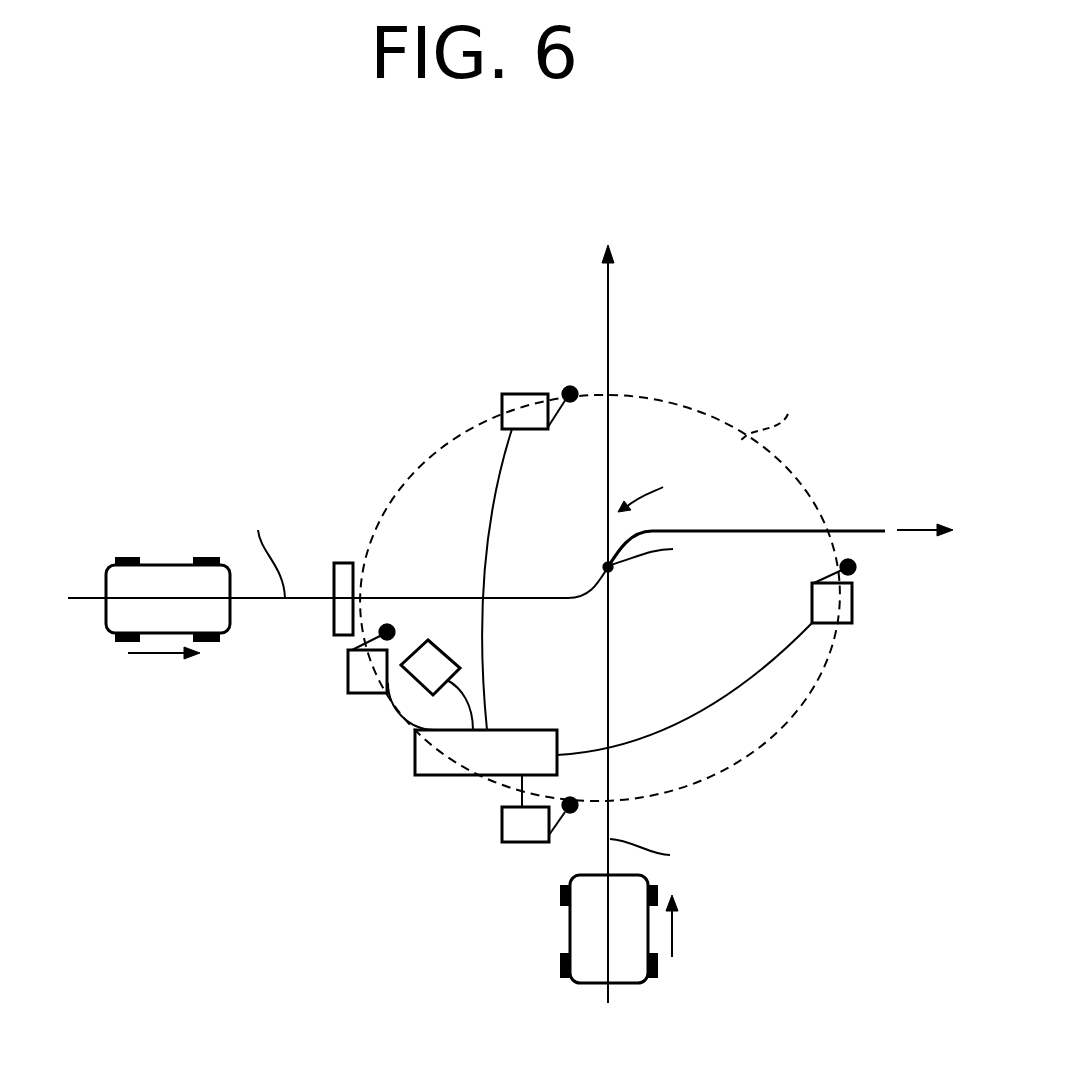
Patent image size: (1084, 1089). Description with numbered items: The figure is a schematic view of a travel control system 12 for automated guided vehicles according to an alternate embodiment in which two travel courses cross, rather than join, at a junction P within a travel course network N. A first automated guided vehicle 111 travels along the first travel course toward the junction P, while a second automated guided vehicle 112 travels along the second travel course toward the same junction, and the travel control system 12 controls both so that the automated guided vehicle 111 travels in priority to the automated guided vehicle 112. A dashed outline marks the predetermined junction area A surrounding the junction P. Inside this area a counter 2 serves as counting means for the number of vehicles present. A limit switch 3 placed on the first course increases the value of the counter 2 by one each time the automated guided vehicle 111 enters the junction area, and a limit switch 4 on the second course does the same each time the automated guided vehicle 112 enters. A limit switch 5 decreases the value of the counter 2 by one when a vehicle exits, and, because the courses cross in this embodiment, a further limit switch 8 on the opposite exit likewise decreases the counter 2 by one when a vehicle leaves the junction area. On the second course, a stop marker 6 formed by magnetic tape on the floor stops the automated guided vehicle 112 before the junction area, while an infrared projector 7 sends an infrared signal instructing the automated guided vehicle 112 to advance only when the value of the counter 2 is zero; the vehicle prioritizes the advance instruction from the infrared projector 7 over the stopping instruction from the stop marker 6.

The counter 2 is at (443, 777).
The limit switch 3 is at (513, 843).
The limit switch 4 is at (348, 672).
The limit switch 5 is at (533, 394).
The stop marker 6 is at (341, 563).
The infrared projector 7 is at (403, 697).
The limit switch 8 is at (830, 623).
The travel control system 12 is at (745, 303).
The automated guided vehicle 111 is at (569, 937).
The automated guided vehicle 112 is at (168, 563).